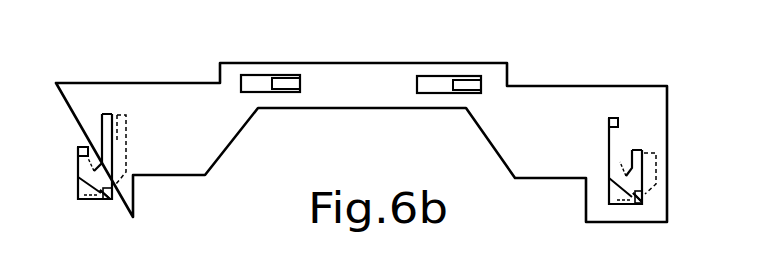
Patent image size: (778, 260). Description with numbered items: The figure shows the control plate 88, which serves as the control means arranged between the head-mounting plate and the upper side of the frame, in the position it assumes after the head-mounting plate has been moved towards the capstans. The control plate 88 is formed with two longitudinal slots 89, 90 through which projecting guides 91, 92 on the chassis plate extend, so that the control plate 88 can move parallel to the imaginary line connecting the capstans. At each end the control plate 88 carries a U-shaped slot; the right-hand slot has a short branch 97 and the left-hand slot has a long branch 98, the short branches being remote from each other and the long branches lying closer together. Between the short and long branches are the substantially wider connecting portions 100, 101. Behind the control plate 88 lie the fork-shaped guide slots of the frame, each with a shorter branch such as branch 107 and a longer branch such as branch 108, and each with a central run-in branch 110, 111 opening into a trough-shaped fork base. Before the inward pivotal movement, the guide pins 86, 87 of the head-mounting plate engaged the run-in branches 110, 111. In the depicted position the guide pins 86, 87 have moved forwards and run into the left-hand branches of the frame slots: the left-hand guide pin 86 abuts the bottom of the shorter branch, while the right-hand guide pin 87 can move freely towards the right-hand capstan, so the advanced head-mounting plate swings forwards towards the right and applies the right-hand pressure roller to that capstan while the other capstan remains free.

The guide pin 86 is at (83, 147).
The guide pin 87 is at (613, 118).
The control plate 88 is at (530, 95).
The longitudinal slot 89 is at (250, 83).
The longitudinal slot 90 is at (435, 83).
The projecting guide 91 is at (290, 83).
The projecting guide 92 is at (468, 83).
The short branch 97 is at (636, 150).
The long branch 98 is at (108, 118).
The connecting portion 100 is at (87, 203).
The connecting portion 101 is at (618, 198).
The shorter branch 107 is at (651, 155).
The longer branch 108 is at (125, 126).
The run-in branch 110 is at (103, 200).
The run-in branch 111 is at (634, 203).